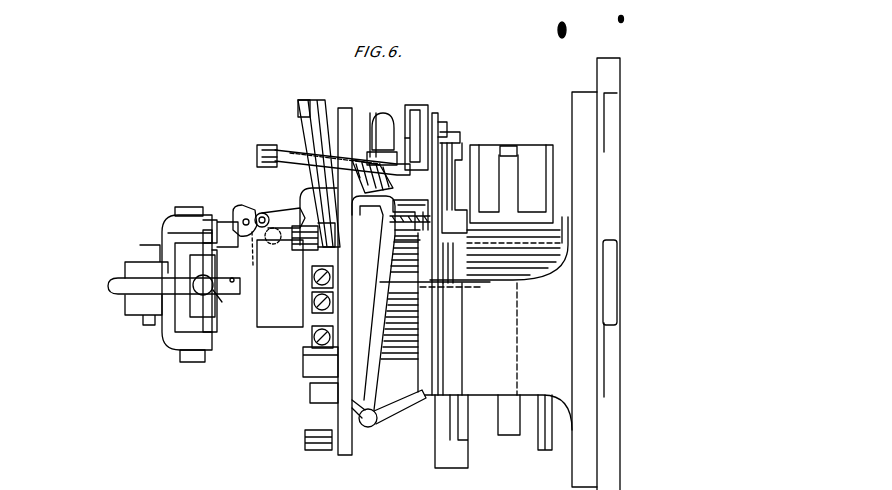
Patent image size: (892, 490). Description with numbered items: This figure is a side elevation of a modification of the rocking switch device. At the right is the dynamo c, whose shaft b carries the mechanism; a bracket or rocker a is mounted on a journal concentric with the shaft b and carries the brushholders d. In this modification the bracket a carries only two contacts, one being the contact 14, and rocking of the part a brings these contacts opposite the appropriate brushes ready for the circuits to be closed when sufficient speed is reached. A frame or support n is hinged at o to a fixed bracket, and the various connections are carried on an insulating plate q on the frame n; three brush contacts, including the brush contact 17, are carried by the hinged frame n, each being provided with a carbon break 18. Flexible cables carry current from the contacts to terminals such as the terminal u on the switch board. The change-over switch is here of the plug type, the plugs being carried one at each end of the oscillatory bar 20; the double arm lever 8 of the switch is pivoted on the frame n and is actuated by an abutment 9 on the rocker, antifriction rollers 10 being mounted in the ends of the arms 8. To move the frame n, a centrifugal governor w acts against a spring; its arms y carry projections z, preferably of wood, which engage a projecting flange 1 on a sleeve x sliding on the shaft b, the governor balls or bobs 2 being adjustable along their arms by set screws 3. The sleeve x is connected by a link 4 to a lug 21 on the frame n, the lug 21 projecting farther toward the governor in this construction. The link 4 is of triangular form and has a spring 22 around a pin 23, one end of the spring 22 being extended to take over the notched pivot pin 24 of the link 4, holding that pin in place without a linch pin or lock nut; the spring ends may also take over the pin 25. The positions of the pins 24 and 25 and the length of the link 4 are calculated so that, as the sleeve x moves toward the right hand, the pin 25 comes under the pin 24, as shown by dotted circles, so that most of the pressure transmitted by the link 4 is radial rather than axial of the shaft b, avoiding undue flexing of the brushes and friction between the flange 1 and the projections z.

The dynamo c is at (620, 356).
The brushholder d is at (500, 145).
The shaft b is at (508, 240).
The bracket or rocker a is at (446, 124).
The contact 14 is at (425, 105).
The carbon break 18 is at (388, 115).
The brush contact 17 is at (370, 140).
The change-over switch lever arm 8 is at (375, 163).
The oscillatory bar 20 is at (257, 156).
The insulating plate q is at (315, 99).
The antifriction roller 10 is at (378, 176).
The abutment 9 is at (410, 202).
The frame or support n is at (386, 303).
The hinge o is at (375, 426).
The terminal u is at (305, 440).
The pivot pin 24 is at (280, 283).
The spring 22 is at (220, 233).
The pin 23 is at (242, 205).
The link 4 is at (261, 212).
The lug 21 is at (298, 207).
The pin 25 is at (241, 249).
The governor arm y is at (163, 340).
The projecting flange 1 is at (205, 207).
The projection z is at (195, 362).
The sleeve x is at (215, 332).
The centrifugal governor w is at (122, 305).
The governor ball or bob 2 is at (202, 285).
The set screw 3 is at (224, 304).